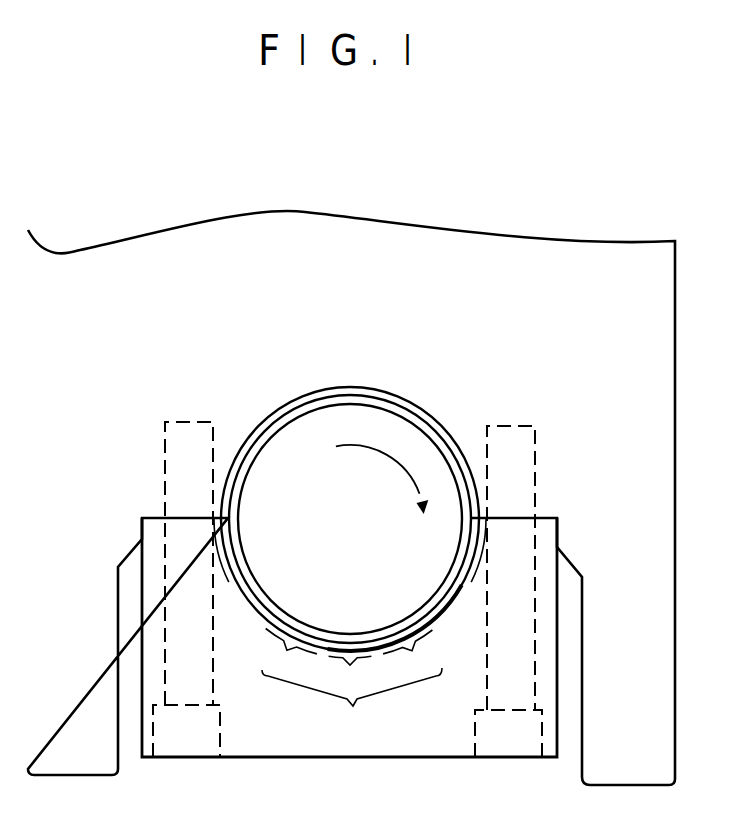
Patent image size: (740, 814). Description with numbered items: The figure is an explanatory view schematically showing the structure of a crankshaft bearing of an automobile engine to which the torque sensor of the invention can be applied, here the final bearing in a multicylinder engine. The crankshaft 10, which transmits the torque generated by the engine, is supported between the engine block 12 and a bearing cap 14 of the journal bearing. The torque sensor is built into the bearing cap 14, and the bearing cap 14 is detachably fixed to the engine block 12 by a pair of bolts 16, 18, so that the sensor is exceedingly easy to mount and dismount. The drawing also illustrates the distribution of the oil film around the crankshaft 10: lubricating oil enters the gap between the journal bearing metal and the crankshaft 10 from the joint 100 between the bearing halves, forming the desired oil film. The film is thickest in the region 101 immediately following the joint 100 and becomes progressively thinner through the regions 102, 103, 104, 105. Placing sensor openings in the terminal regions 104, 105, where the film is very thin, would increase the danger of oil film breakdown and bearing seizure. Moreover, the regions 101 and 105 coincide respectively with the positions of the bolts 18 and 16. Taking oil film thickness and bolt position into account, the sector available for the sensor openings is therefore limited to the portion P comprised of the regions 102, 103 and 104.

The crankshaft 10 is at (323, 417).
The engine block 12 is at (662, 497).
The bearing cap 14 is at (376, 757).
The bolt 16 is at (188, 738).
The bolt 18 is at (506, 738).
The joint between the bearing halves 100 is at (478, 508).
The region immediately following the joint 101 is at (471, 582).
The region 102 is at (407, 654).
The region 103 is at (350, 673).
The region 104 is at (290, 649).
The region 105 is at (229, 582).
The portion P is at (352, 699).